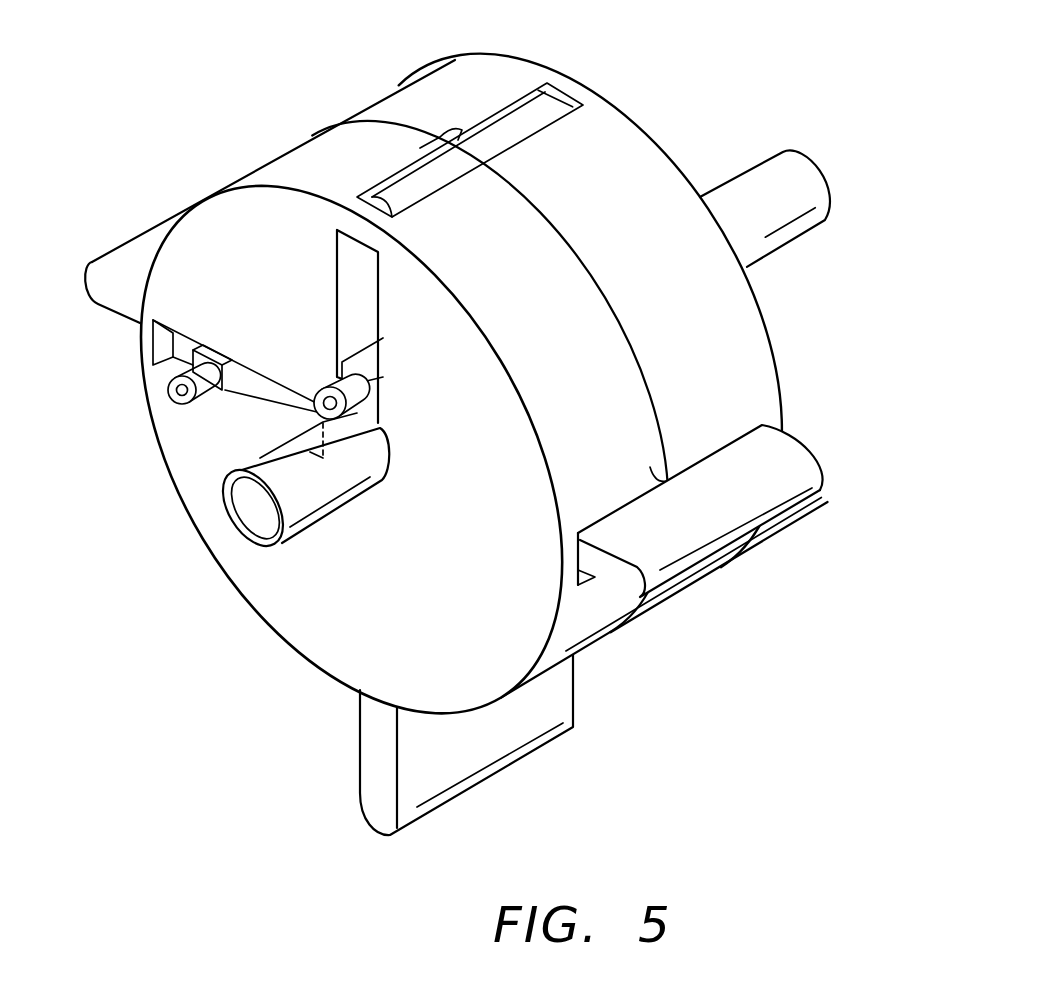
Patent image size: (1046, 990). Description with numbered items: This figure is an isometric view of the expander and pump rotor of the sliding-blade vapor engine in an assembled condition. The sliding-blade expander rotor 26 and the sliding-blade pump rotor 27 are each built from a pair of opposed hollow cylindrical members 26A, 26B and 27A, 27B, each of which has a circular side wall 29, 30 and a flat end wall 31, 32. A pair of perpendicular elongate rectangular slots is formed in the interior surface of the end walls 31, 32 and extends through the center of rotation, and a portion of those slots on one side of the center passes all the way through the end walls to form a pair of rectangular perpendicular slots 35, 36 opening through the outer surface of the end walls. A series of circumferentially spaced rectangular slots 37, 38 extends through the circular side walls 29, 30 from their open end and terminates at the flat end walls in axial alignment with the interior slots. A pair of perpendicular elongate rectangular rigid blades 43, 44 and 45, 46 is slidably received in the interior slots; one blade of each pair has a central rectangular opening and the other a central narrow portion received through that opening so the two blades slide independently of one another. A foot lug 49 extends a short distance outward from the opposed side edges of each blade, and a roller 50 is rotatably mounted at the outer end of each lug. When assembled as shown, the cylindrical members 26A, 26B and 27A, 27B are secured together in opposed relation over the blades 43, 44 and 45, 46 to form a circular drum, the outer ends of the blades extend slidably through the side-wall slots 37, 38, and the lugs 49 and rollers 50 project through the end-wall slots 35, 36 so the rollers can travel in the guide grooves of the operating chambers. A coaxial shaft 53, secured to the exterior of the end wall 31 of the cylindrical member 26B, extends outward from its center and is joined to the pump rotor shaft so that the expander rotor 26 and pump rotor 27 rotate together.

The sliding-blade expander rotor 26 is at (511, 420).
The sliding-blade pump rotor 27 is at (511, 420).
The hollow cylindrical member 26A is at (511, 420).
The hollow cylindrical member 27A is at (511, 420).
The hollow cylindrical member 26B is at (498, 349).
The hollow cylindrical member 27B is at (498, 349).
The circular side wall 29 is at (697, 588).
The circular side wall 30 is at (693, 580).
The end wall 31 is at (511, 393).
The end wall 32 is at (702, 188).
The rectangular perpendicular slot 35 is at (255, 383).
The rectangular perpendicular slot 36 is at (357, 310).
The rectangular slot 37 is at (510, 320).
The rectangular slot 38 is at (433, 140).
The elongate rectangular rigid blade 43 is at (466, 748).
The elongate rectangular rigid blade 44 is at (450, 772).
The elongate rectangular rigid blade 45 is at (741, 500).
The elongate rectangular rigid blade 46 is at (783, 460).
The foot lug 49 is at (367, 362).
The roller 50 is at (356, 392).
The shaft 53 is at (312, 495).